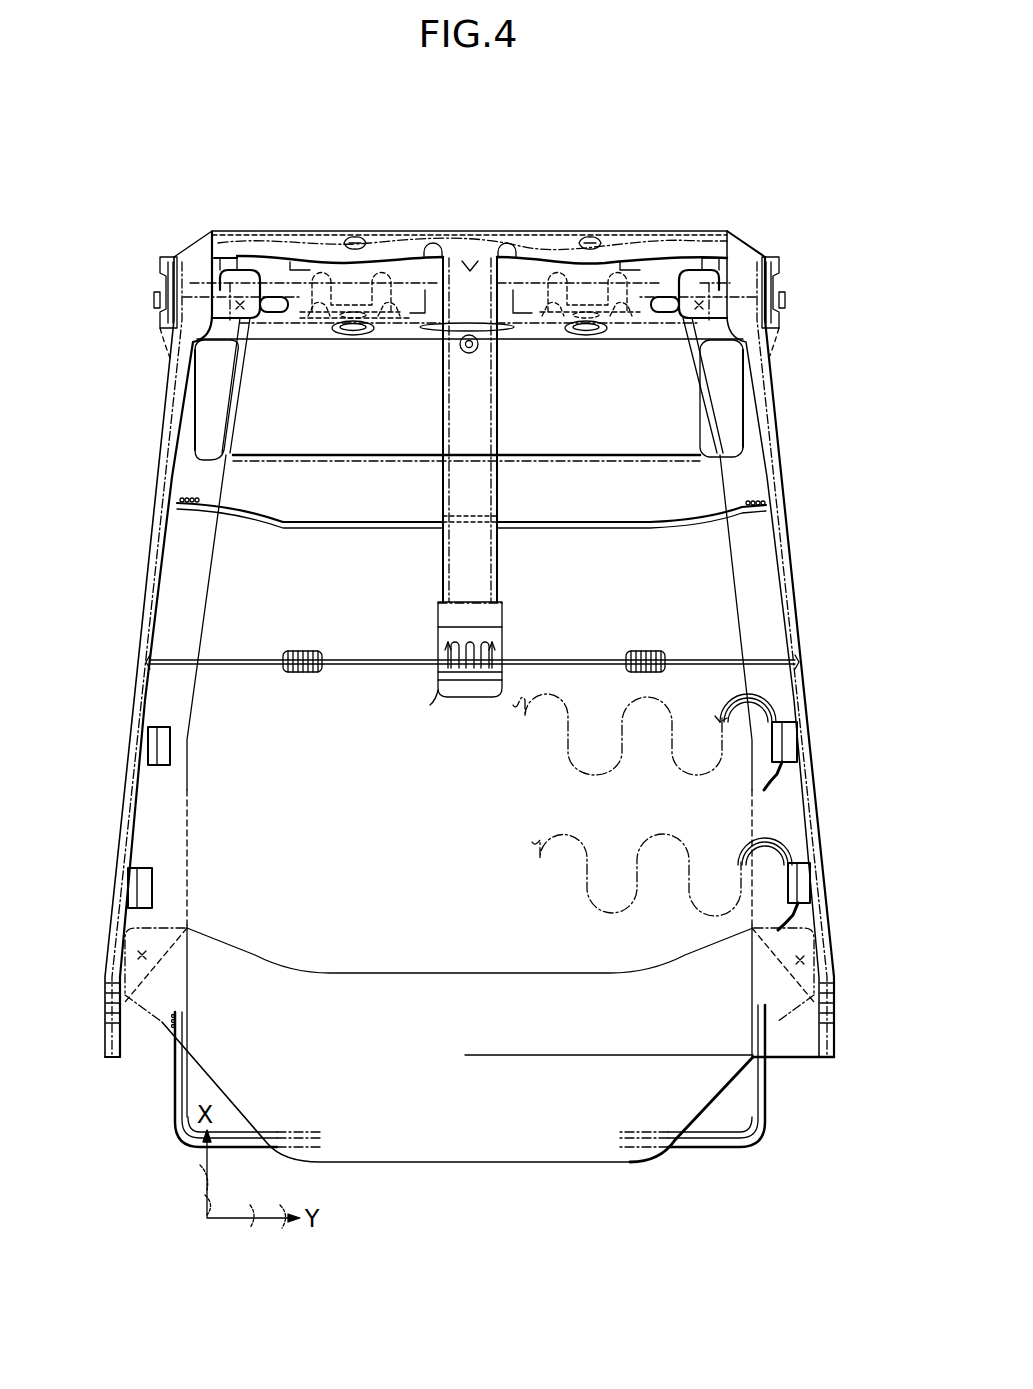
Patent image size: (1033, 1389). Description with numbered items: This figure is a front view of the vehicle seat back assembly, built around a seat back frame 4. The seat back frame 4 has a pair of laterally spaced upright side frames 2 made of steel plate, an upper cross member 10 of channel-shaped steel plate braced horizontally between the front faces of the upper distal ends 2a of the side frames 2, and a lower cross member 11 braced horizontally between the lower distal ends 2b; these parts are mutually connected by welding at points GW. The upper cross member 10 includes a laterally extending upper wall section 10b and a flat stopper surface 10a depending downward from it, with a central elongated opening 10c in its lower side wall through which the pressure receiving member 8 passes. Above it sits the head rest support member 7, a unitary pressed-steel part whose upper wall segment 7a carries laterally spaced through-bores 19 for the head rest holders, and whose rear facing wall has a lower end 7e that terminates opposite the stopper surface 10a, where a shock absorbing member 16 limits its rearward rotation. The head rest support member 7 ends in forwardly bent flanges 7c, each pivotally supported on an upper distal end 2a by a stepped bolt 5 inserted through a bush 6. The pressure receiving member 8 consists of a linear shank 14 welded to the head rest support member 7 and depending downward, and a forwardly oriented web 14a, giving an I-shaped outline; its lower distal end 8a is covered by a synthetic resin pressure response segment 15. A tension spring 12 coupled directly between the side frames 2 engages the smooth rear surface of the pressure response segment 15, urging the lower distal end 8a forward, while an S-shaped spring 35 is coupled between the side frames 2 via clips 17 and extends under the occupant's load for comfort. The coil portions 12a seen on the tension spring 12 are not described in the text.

The side frame 2 is at (152, 548).
The upper distal end 2a is at (165, 285).
The lower distal end 2b is at (835, 1028).
The seat back frame 4 is at (833, 776).
The stepped bolt 5 is at (150, 305).
The bush 6 is at (178, 340).
The head rest support member 7 is at (727, 229).
The upper wall segment 7a is at (665, 238).
The forwardly bent flange 7c is at (154, 300).
The lower end 7e is at (362, 346).
The pressure receiving member 8 is at (503, 586).
The lower distal end 8a is at (440, 696).
The upper cross member 10 is at (641, 330).
The stopper surface 10a is at (580, 459).
The upper wall section 10b is at (585, 345).
The elongated opening 10c is at (523, 348).
The lower cross member 11 is at (440, 1151).
The tension spring 12 is at (580, 658).
The coil spring 12a is at (300, 652).
The linear shank 14 is at (497, 415).
The forwardly oriented web 14a is at (445, 523).
The pressure response segment 15 is at (468, 699).
The shock absorbing member 16 is at (462, 352).
The clip 17 is at (150, 748).
The through-bore 19 is at (356, 238).
The S-shaped spring 35 is at (587, 857).
The welding point GW is at (695, 303).